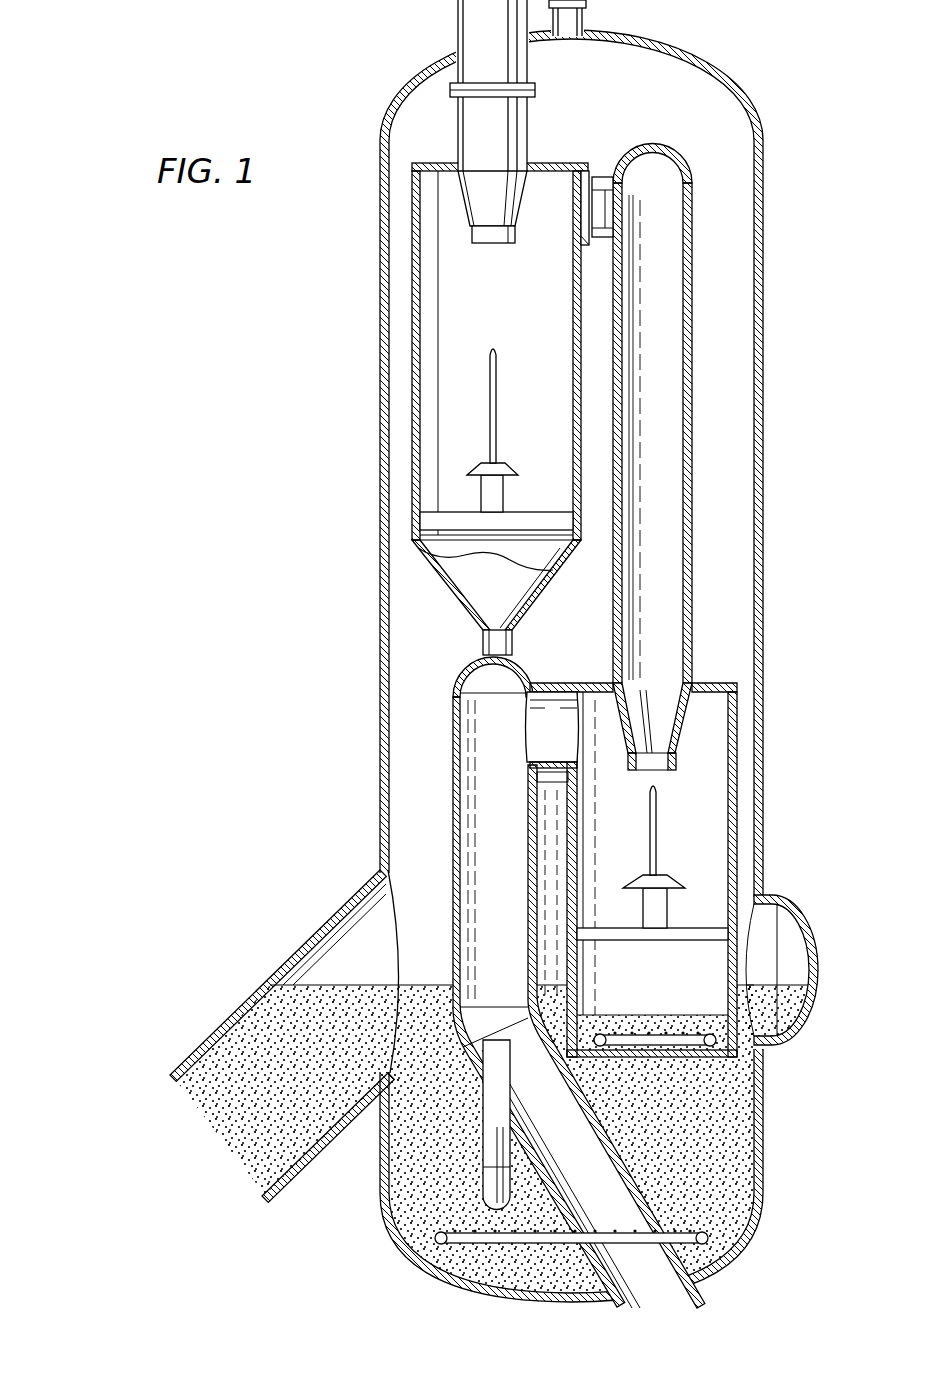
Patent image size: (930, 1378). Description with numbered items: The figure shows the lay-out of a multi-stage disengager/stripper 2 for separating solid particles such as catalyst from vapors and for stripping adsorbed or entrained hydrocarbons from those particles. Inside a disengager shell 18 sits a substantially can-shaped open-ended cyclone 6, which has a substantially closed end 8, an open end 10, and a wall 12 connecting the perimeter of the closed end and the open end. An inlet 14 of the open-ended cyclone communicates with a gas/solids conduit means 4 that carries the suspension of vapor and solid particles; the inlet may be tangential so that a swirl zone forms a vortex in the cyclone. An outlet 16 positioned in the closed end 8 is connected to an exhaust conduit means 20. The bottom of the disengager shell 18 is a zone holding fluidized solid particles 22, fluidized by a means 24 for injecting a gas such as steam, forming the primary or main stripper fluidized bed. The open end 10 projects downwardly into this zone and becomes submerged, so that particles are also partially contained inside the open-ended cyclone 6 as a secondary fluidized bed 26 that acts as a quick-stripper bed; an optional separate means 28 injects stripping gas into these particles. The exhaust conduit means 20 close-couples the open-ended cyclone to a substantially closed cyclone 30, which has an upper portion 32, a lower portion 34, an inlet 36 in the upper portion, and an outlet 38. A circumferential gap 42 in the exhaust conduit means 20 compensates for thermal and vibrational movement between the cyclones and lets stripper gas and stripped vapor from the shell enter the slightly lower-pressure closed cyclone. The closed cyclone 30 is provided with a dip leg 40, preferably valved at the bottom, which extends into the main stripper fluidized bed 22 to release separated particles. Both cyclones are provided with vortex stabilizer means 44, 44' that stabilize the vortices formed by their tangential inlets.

The disengager/stripper 2 is at (800, 243).
The gas/solids conduit means 4 is at (505, 875).
The open-ended cyclone 6 is at (680, 835).
The closed end 8 is at (733, 683).
The open end 10 is at (770, 1090).
The wall 12 is at (740, 822).
The inlet 14 is at (580, 683).
The outlet 16 is at (658, 693).
The disengager shell 18 is at (763, 363).
The exhaust conduit means 20 is at (692, 482).
The fluidized solid particles 22 is at (417, 1178).
The means for injecting a gas 24 is at (447, 1245).
The secondary fluidized bed 26 is at (648, 1017).
The means for injecting stripping gas 28 is at (686, 1036).
The closed cyclone 30 is at (450, 379).
The upper portion 32 is at (410, 243).
The lower portion 34 is at (509, 608).
The inlet 36 is at (579, 205).
The outlet 38 is at (483, 200).
The dip leg 40 is at (490, 645).
The gap 42 is at (597, 168).
The vortex stabilizer means 44 is at (666, 857).
The vortex stabilizer means 44' is at (513, 430).